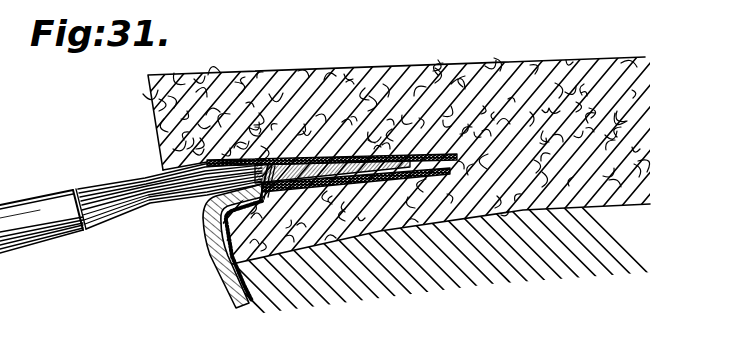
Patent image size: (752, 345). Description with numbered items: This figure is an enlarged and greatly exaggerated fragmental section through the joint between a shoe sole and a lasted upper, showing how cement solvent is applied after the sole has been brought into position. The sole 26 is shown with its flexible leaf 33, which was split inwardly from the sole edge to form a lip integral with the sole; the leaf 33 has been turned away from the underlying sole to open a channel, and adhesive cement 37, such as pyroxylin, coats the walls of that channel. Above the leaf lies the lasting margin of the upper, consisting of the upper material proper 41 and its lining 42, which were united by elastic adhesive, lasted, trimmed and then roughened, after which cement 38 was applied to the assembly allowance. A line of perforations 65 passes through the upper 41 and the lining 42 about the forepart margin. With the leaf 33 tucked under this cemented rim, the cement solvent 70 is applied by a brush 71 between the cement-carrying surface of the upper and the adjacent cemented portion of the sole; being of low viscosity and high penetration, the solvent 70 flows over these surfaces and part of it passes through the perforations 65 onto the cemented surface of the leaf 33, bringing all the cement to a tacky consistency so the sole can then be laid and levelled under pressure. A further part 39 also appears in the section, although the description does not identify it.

The sole 26 is at (500, 72).
The leaf 33 is at (290, 222).
The adhesive cement 37 is at (207, 160).
The cement 38 is at (143, 182).
The lower body 39 is at (492, 268).
The upper material proper 41 is at (208, 247).
The lining 42 is at (235, 278).
The perforations 65 is at (250, 158).
The cement solvent 70 is at (283, 163).
The brush 71 is at (27, 213).